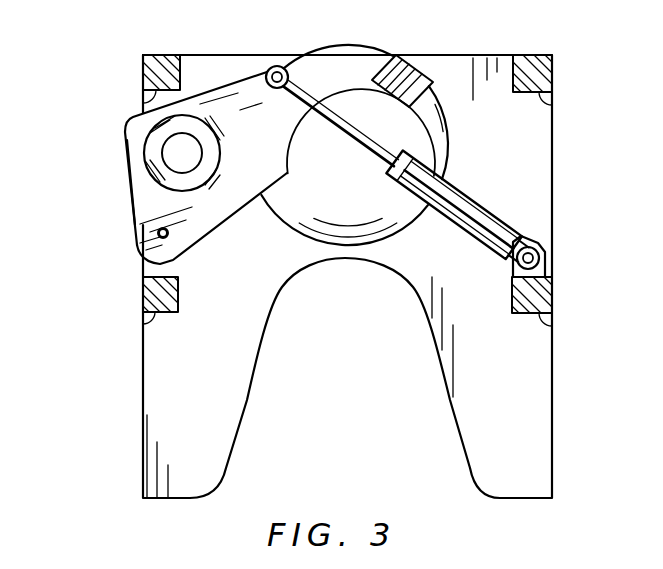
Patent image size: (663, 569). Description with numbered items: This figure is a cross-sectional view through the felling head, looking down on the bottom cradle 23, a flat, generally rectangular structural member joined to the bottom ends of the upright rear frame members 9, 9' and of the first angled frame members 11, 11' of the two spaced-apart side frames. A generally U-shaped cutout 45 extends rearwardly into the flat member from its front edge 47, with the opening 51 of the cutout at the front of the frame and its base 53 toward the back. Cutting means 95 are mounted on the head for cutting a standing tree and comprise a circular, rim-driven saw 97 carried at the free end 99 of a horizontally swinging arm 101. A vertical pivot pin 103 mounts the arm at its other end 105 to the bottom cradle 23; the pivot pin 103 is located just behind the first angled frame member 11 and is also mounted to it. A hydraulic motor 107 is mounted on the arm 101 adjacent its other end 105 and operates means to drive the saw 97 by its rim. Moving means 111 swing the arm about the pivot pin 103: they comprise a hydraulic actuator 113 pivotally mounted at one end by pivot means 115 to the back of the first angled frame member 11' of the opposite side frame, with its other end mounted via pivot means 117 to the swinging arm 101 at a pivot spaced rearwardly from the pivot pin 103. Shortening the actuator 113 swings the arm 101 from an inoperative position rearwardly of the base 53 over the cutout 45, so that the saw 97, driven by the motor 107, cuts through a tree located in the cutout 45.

The rear frame member 9 is at (132, 86).
The rear frame member 9' is at (568, 91).
The first angled frame member 11 is at (125, 316).
The first angled frame member 11' is at (571, 312).
The bottom cradle 23 is at (557, 409).
The U-shaped cutout 45 is at (446, 381).
The front edge 47 is at (160, 497).
The opening 51 is at (249, 498).
The base 53 is at (357, 262).
The cutting means 95 is at (117, 186).
The rim-driven saw 97 is at (445, 160).
The free end 99 is at (428, 58).
The swinging arm 101 is at (250, 74).
The pivot pin 103 is at (157, 238).
The other end 105 is at (133, 220).
The hydraulic motor 107 is at (144, 153).
The moving means 111 is at (510, 199).
The hydraulic actuator 113 is at (522, 228).
The pivot means 115 is at (548, 260).
The pivot means 117 is at (279, 64).